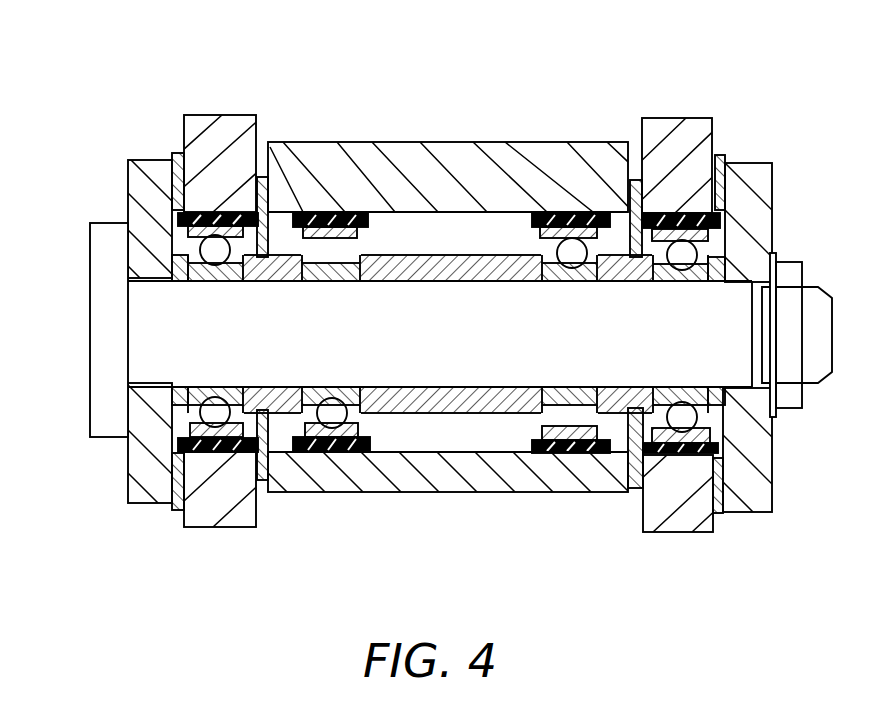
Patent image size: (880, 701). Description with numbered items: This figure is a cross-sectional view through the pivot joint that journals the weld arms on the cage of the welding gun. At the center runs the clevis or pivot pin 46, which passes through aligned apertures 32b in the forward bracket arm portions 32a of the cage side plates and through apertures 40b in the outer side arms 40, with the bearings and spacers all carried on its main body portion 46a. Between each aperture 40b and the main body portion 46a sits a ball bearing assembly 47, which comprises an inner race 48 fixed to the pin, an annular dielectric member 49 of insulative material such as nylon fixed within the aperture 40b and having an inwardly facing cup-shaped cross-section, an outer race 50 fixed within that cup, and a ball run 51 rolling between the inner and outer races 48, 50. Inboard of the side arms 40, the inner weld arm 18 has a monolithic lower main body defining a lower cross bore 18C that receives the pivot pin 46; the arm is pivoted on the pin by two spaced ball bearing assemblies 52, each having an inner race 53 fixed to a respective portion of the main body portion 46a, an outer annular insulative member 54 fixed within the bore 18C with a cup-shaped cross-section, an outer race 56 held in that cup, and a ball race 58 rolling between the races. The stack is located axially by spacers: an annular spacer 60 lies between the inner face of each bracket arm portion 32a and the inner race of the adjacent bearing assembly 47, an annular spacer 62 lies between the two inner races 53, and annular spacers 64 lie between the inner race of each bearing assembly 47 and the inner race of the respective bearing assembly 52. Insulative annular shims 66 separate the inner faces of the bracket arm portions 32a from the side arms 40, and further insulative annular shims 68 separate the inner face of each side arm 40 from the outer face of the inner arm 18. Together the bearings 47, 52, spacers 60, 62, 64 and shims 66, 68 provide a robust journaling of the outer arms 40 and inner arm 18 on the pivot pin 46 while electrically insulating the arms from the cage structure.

The inner weld arm 18 is at (374, 146).
The lower cross bore 18C is at (446, 212).
The bracket arm portions 32a is at (140, 160).
The aligned apertures 32b is at (150, 291).
The side arms 40 is at (219, 114).
The apertures 40b is at (222, 450).
The clevis or pivot pin 46 is at (89, 352).
The main body portion 46a is at (443, 346).
The ball bearing assembly 47 is at (192, 413).
The inner race 48 is at (255, 386).
The annular dielectric member 49 is at (183, 447).
The outer race 50 is at (632, 460).
The ball run 51 is at (210, 401).
The ball bearing assemblies 52 is at (350, 242).
The inner race 53 is at (316, 283).
The outer annular insulative member 54 is at (311, 212).
The outer race 56 is at (546, 226).
The ball race 58 is at (577, 268).
The annular spacer 60 is at (150, 288).
The annular spacer 62 is at (383, 283).
The annular spacers 64 is at (247, 283).
The insulative annular shims 66 is at (177, 150).
The insulative annular shims 68 is at (262, 177).